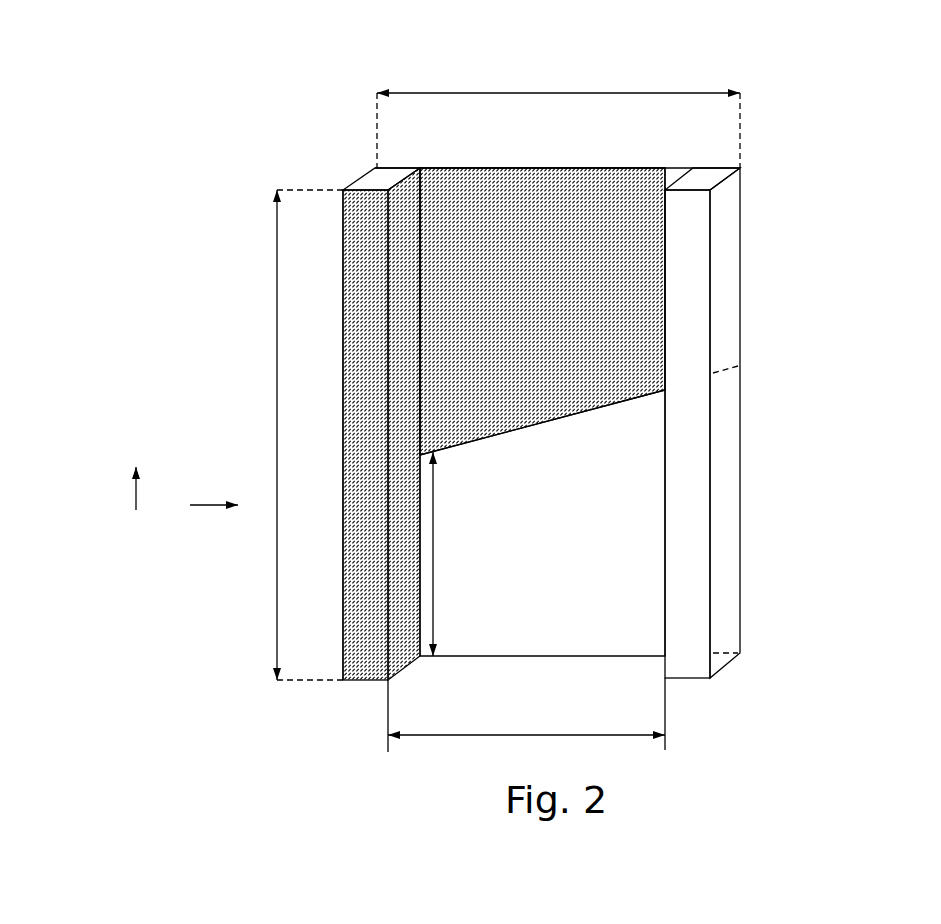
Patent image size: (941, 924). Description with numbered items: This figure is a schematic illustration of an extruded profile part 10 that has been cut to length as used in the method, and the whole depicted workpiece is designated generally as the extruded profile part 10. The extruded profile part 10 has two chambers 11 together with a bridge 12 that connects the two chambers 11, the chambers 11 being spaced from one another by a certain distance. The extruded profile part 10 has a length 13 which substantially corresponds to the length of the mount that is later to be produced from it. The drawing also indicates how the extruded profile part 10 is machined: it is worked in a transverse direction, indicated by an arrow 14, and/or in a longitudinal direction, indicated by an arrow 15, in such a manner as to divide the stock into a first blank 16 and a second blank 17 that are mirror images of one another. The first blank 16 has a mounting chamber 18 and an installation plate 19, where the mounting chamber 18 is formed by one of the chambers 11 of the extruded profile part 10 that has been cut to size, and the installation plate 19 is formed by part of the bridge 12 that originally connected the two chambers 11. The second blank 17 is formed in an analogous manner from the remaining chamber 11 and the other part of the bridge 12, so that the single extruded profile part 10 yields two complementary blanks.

The extruded profile part 10 is at (508, 387).
The chamber 11 is at (528, 394).
The bridge 12 is at (580, 165).
The length 13 is at (296, 435).
The arrow 14 is at (213, 493).
The arrow 15 is at (124, 490).
The first blank 16 is at (320, 307).
The second blank 17 is at (742, 457).
The mounting chamber 18 is at (358, 412).
The installation plate 19 is at (483, 218).